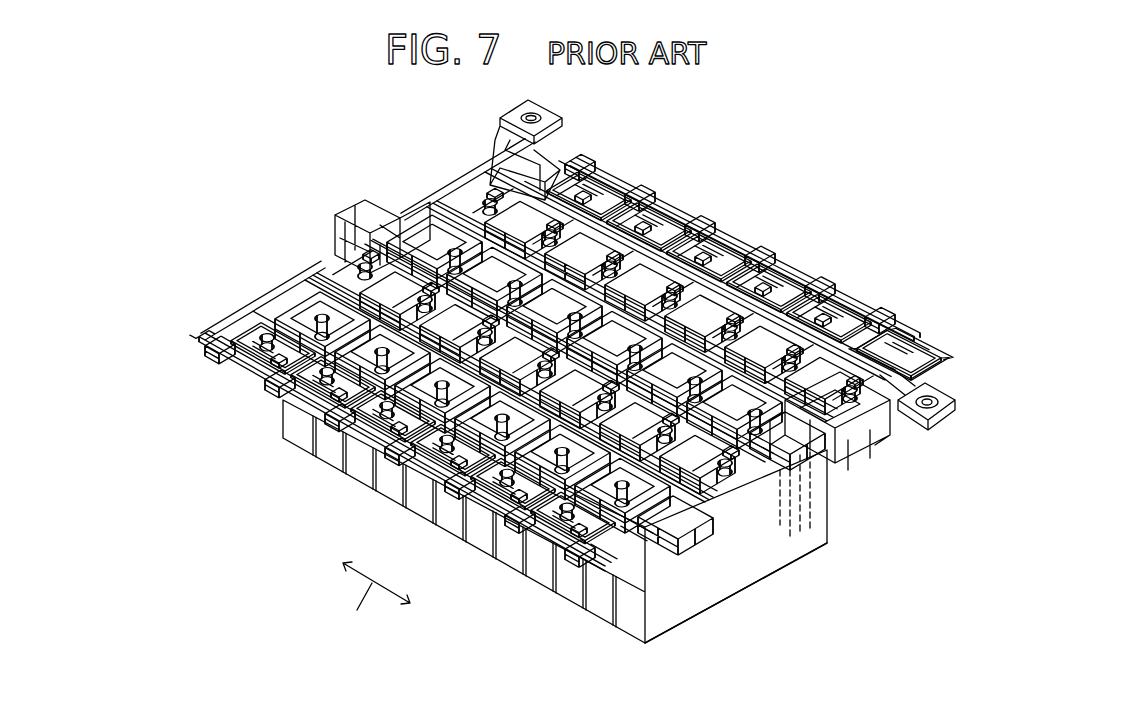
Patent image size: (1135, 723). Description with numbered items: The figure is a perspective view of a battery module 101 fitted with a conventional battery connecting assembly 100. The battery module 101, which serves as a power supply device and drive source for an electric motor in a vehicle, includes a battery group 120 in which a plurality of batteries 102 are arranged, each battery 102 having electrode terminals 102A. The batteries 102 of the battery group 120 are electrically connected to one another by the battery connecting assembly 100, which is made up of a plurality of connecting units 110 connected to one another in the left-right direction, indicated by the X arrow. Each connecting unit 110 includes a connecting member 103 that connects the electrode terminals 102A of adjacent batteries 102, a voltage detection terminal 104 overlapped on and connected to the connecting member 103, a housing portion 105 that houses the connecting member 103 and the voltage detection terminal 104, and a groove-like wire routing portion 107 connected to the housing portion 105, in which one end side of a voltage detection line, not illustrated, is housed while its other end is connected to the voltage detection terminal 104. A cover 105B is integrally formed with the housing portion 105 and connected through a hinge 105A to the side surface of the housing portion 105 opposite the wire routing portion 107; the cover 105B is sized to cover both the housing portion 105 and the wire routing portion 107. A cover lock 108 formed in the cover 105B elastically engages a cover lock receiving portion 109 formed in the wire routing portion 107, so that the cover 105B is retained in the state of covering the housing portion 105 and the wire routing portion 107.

The battery connecting assembly 100 is at (701, 189).
The battery module 101 is at (814, 248).
The battery 102 is at (295, 440).
The electrode terminal 102A is at (480, 190).
The connecting member 103 is at (897, 328).
The voltage detection terminal 104 is at (828, 347).
The housing portion 105 is at (703, 307).
The hinge 105A is at (710, 300).
The cover 105B is at (596, 175).
The wire routing portion 107 is at (657, 330).
The cover lock 108 is at (767, 290).
The cover lock receiving portion 109 is at (770, 273).
The connecting unit 110 is at (602, 185).
The battery group 120 is at (689, 633).